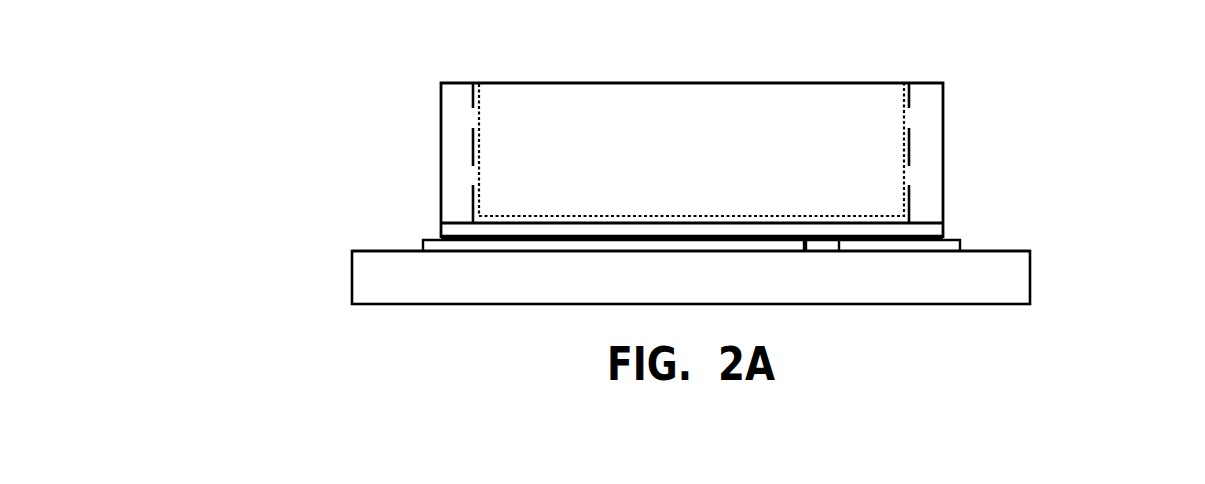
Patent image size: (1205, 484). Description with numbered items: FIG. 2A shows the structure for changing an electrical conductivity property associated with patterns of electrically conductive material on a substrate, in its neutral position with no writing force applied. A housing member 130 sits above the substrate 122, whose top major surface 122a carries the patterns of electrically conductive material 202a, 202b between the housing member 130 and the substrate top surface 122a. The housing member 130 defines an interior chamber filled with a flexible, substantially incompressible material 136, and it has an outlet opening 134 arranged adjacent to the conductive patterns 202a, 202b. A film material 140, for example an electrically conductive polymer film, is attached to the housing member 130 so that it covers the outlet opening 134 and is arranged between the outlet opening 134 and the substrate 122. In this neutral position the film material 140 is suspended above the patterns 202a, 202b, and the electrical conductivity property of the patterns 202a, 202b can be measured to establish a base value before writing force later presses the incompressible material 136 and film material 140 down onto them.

The substrate 122 is at (405, 293).
The substrate top surface 122a is at (387, 250).
The housing member 130 is at (943, 83).
The outlet opening 134 is at (477, 220).
The incompressible material 136 is at (712, 105).
The film material 140 is at (945, 228).
The pattern of electrically conductive material 202a is at (962, 245).
The pattern of electrically conductive material 202b is at (962, 245).